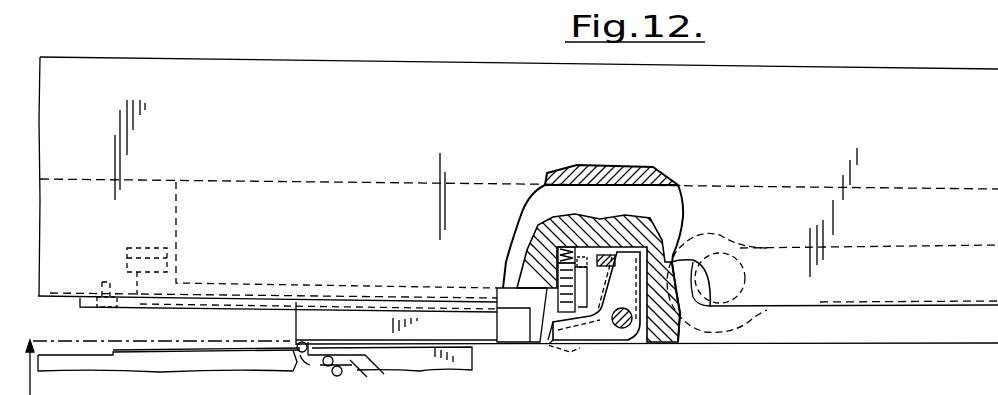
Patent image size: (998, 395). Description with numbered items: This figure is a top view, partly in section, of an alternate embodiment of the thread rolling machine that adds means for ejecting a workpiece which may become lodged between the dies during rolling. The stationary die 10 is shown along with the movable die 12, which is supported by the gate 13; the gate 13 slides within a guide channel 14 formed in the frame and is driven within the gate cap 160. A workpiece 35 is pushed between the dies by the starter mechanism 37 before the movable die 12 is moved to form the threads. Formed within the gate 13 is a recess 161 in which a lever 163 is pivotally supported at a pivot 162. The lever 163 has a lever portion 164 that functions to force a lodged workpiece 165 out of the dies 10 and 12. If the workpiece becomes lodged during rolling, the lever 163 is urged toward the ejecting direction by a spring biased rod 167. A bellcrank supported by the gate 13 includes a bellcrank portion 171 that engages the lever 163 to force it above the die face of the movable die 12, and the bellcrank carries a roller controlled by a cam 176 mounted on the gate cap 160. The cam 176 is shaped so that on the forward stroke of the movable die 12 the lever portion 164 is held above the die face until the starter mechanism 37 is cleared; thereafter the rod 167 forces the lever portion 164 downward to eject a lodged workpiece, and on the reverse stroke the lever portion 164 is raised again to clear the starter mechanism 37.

The stationary die 10 is at (222, 358).
The movable die 12 is at (317, 337).
The gate 13 is at (693, 173).
The guide channel 14 is at (89, 184).
The workpiece 35 is at (337, 377).
The starter mechanism 37 is at (348, 375).
The gate cap 160 is at (357, 236).
The recess 161 is at (633, 230).
The pivot 162 is at (624, 330).
The lever 163 is at (627, 278).
The lever portion 164 is at (552, 338).
The workpiece 165 is at (299, 352).
The spring biased rod 167 is at (557, 309).
The bellcrank portion 171 is at (597, 250).
The cam 176 is at (398, 303).